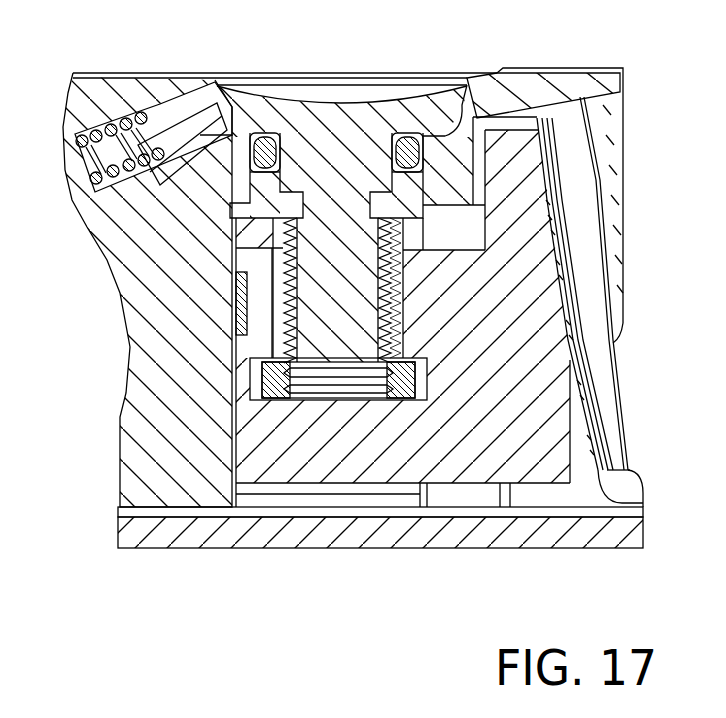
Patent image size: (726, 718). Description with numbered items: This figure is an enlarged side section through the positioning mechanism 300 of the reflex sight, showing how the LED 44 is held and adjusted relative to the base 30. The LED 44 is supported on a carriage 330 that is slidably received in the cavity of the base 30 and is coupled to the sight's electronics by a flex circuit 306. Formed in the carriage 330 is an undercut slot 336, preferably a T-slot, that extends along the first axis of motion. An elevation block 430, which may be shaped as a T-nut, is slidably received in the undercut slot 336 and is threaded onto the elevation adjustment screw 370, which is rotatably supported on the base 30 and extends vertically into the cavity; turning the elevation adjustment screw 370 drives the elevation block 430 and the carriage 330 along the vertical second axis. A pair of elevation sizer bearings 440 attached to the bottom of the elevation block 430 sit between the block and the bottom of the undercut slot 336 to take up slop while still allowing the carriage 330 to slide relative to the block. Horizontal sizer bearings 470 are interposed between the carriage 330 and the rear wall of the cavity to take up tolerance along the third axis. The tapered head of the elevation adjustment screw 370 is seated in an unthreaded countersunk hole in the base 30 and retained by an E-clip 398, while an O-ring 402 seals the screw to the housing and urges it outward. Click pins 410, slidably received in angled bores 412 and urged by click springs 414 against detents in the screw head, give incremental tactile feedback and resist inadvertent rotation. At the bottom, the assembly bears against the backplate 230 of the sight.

The base 30 is at (569, 88).
The LED 44 is at (555, 200).
The backplate 230 is at (517, 537).
The positioning mechanism 300 is at (590, 228).
The flex circuit 306 is at (600, 345).
The carriage 330 is at (383, 460).
The undercut slot 336 is at (428, 385).
The elevation adjustment screw 370 is at (347, 97).
The E-clip 398 is at (240, 224).
The O-ring 402 is at (408, 148).
The click pin 410 is at (176, 122).
The angled bore 412 is at (212, 88).
The click spring 414 is at (105, 130).
The elevation block 430 is at (430, 358).
The elevation sizer bearing 440 is at (317, 405).
The horizontal sizer bearing 470 is at (238, 305).